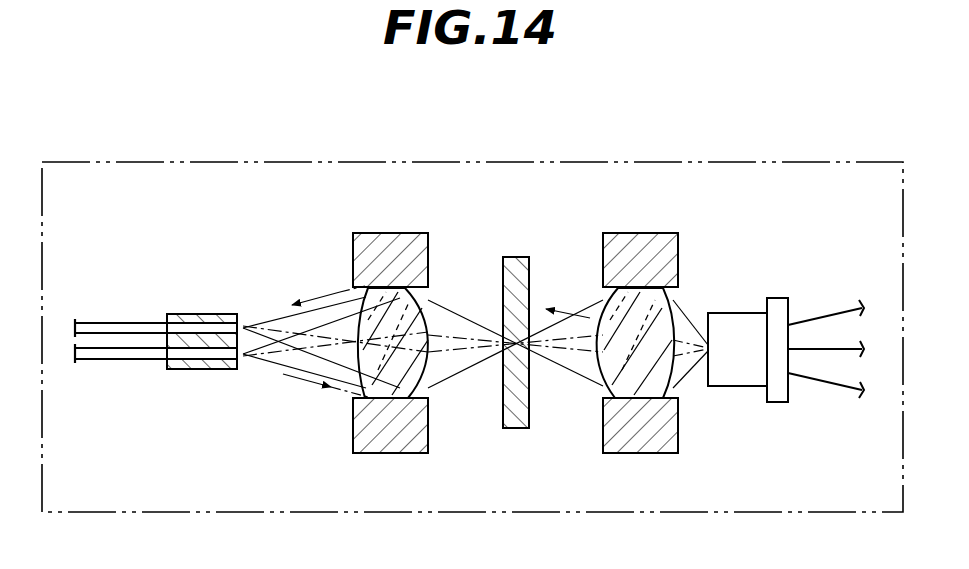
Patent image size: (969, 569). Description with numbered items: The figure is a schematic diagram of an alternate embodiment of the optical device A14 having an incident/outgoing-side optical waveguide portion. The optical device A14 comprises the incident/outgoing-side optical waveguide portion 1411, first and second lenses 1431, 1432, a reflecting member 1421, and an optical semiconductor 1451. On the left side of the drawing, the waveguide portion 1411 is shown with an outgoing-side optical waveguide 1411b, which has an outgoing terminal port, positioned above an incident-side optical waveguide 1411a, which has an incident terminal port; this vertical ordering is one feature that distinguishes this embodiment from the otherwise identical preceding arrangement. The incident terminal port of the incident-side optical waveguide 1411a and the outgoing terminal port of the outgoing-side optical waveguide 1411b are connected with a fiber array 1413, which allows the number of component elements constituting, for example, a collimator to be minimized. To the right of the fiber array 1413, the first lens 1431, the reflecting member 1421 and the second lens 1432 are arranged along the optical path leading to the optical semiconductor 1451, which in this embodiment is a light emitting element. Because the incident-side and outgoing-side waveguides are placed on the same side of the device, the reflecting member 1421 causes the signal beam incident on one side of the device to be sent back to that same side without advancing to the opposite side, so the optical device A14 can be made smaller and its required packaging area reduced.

The optical device A14 is at (650, 162).
The incident/outgoing-side optical waveguide portion 1411 is at (161, 324).
The incident-side optical waveguide 1411a is at (133, 360).
The outgoing-side optical waveguide 1411b is at (118, 322).
The fiber array 1413 is at (207, 314).
The reflecting member 1421 is at (502, 283).
The first lens 1431 is at (363, 300).
The second lens 1432 is at (617, 310).
The optical semiconductor 1451 is at (725, 313).